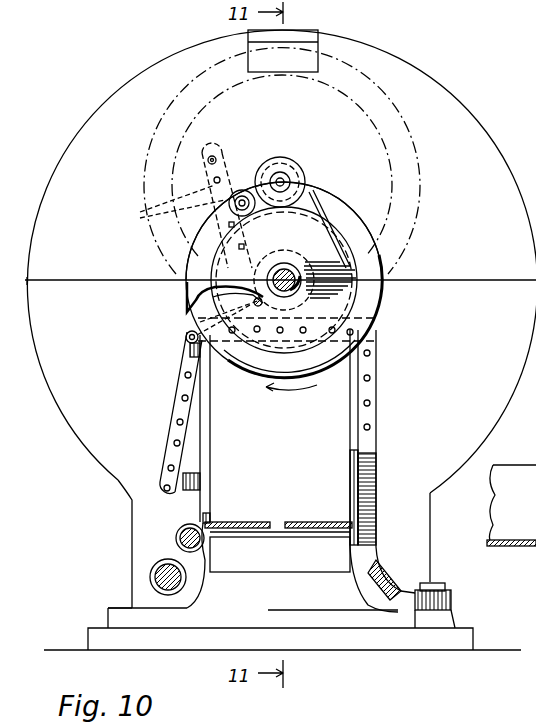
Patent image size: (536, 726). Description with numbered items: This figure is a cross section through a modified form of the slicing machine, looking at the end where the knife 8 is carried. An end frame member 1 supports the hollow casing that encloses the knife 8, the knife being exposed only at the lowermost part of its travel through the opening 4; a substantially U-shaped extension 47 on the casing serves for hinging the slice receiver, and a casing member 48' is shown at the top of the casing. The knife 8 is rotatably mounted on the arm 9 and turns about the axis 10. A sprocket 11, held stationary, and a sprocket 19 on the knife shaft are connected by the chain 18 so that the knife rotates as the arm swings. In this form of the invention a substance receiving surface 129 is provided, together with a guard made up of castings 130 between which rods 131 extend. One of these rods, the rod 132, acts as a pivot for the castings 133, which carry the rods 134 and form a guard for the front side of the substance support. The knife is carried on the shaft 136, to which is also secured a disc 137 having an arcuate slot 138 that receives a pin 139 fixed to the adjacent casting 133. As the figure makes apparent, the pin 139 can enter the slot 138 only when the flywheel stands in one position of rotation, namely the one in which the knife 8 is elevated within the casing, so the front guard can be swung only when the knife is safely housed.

The end frame member 1 is at (425, 568).
The opening 4 is at (203, 510).
The knife 8 is at (418, 148).
The arm 9 is at (383, 300).
The axis 10 is at (302, 172).
The sprocket 11 is at (332, 250).
The chain 18 is at (323, 207).
The sprocket 19 is at (306, 191).
The U-shaped extension 47 is at (203, 502).
The top block 48' is at (304, 39).
The substance receiving surface 129 is at (290, 528).
The castings 130 is at (368, 473).
The rods 131 is at (368, 353).
The rod 132 is at (235, 345).
The castings 133 is at (208, 168).
The rods 134 is at (167, 470).
The shaft 136 is at (318, 275).
The disc 137 is at (347, 215).
The arcuate slot 138 is at (188, 285).
The pin 139 is at (186, 338).